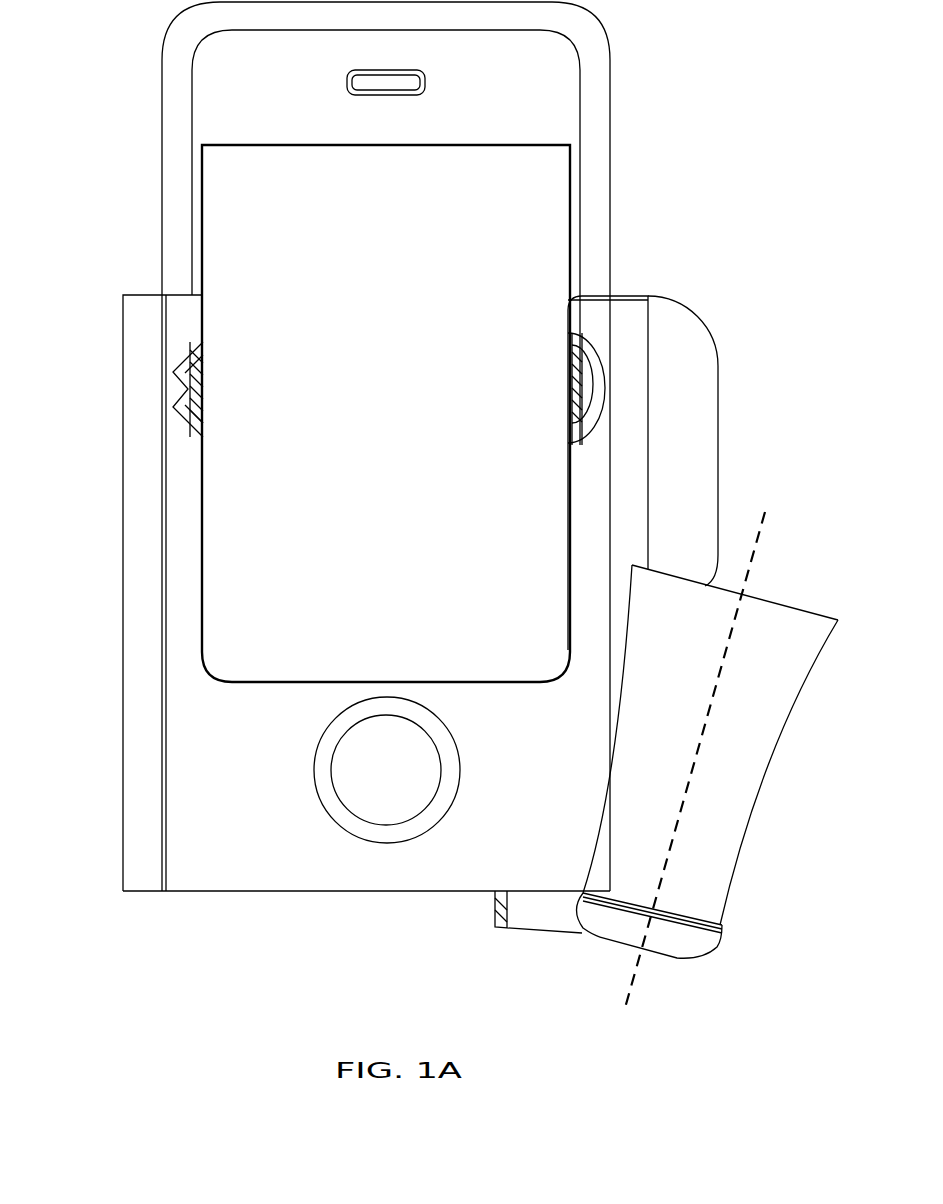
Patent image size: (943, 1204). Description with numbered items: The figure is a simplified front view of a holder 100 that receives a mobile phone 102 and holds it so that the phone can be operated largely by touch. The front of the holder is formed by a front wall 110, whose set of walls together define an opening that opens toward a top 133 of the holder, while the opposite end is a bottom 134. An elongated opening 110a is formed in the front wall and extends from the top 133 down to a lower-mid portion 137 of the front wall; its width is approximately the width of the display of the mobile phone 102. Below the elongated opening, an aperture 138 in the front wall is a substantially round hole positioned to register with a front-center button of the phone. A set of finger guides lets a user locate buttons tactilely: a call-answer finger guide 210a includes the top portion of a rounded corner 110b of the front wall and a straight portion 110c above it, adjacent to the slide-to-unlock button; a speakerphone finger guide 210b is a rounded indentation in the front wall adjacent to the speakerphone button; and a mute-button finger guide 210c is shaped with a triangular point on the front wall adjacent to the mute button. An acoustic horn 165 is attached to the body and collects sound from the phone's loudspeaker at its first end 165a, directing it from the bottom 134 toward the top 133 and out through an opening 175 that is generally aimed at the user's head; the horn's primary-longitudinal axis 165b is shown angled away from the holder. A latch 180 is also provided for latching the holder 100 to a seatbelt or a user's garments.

The holder 100 is at (202, 983).
The mobile phone 102 is at (611, 85).
The front wall 110 is at (212, 748).
The elongated opening 110a is at (263, 365).
The rounded corner 110b is at (212, 664).
The straight portion 110c is at (218, 618).
The top 133 is at (633, 295).
The bottom 134 is at (184, 895).
The lower-mid portion 137 is at (113, 652).
The aperture 138 is at (325, 812).
The acoustic horn 165 is at (760, 822).
The first end of acoustic horn 165a is at (565, 937).
The primary-longitudinal axis 165b is at (762, 527).
The opening of the acoustic horn 175 is at (795, 608).
The latch 180 is at (712, 347).
The call-answer finger guide 210a is at (218, 641).
The speakerphone finger guide 210b is at (600, 393).
The mute-button finger guide 210c is at (180, 389).